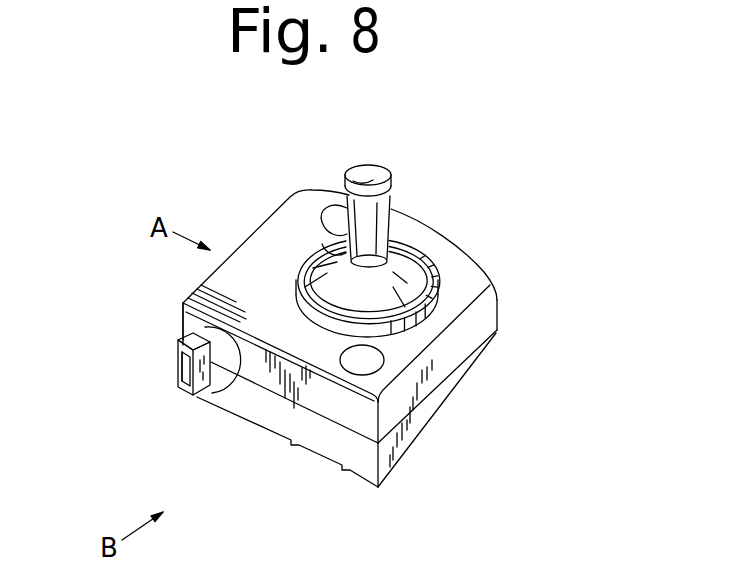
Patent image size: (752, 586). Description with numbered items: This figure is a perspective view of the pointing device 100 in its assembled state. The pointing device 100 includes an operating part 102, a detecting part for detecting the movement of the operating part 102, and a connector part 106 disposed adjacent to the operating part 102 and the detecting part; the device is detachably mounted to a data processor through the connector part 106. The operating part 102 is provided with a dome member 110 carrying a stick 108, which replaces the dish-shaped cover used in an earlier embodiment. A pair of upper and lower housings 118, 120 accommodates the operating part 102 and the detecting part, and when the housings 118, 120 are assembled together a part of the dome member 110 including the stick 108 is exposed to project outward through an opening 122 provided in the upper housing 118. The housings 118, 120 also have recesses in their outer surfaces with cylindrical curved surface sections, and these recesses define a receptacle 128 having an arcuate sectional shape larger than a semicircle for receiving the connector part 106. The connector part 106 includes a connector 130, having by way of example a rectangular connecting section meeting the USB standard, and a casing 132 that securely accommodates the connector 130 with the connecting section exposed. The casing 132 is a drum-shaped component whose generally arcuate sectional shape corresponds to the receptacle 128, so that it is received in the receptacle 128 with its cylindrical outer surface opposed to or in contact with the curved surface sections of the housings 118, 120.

The pointing device 100 is at (198, 170).
The operating part 102 is at (545, 143).
The connector part 106 is at (177, 363).
The stick 108 is at (374, 176).
The dome member 110 is at (405, 267).
The upper housing 118 is at (433, 367).
The lower housing 120 is at (420, 423).
The opening 122 is at (347, 228).
The receptacle 128 is at (212, 393).
The connector 130 is at (178, 389).
The casing 132 is at (182, 325).